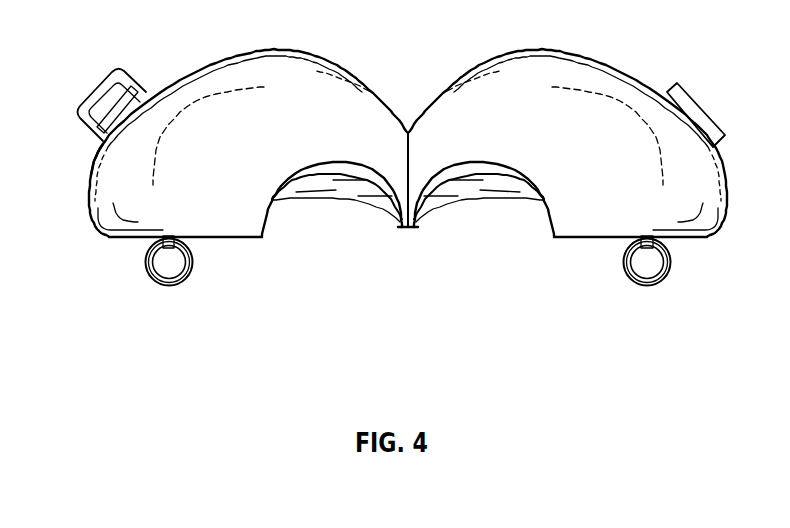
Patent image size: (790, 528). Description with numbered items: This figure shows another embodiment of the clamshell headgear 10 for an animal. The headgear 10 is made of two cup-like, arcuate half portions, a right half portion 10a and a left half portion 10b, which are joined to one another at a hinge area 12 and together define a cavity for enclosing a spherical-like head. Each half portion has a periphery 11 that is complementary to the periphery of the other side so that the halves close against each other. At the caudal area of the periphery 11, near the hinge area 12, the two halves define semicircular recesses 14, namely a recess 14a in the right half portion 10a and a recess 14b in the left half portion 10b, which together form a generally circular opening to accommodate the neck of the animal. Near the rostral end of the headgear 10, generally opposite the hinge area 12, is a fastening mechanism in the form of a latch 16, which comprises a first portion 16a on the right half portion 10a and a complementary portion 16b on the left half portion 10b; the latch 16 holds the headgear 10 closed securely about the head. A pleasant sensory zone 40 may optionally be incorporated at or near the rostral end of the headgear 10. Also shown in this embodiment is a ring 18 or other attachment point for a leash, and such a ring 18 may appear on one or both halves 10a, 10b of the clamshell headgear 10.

The headgear 10 is at (583, 254).
The right half portion 10a is at (529, 55).
The left half portion 10b is at (266, 68).
The periphery 11 is at (108, 234).
The hinge area 12 is at (410, 104).
The semicircular recesses 14 is at (411, 246).
The semicircular recess 14a is at (470, 177).
The semicircular recess 14b is at (350, 177).
The latch 16 is at (112, 80).
The first portion of latch 16a is at (688, 100).
The complementary portion of latch 16b is at (80, 104).
The ring 18 is at (168, 286).
The pleasant sensory zone 40 is at (707, 201).